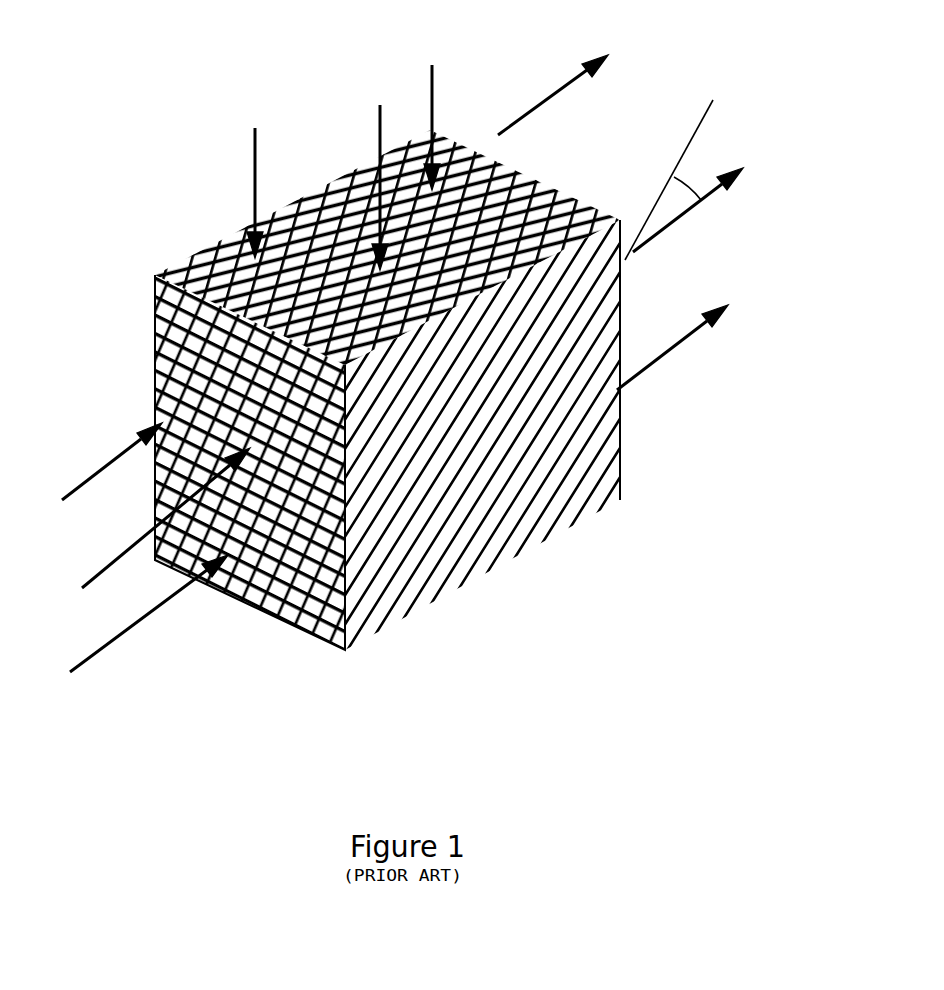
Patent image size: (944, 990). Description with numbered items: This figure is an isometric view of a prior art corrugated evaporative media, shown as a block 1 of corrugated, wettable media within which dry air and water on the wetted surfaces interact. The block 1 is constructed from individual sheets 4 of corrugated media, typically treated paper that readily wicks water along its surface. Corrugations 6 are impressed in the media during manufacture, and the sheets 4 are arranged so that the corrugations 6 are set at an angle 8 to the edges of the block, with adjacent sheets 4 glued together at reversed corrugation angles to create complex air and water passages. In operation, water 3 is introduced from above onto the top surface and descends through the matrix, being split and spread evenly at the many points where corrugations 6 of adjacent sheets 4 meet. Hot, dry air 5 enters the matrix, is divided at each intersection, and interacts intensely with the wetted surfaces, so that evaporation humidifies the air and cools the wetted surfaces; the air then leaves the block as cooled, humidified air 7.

The block 1 is at (480, 442).
The water 3 is at (343, 167).
The sheets 4 is at (187, 255).
The hot, dry air 5 is at (141, 547).
The corrugations 6 is at (678, 164).
The cooled, humidified air 7 is at (696, 210).
The angle 8 is at (683, 194).